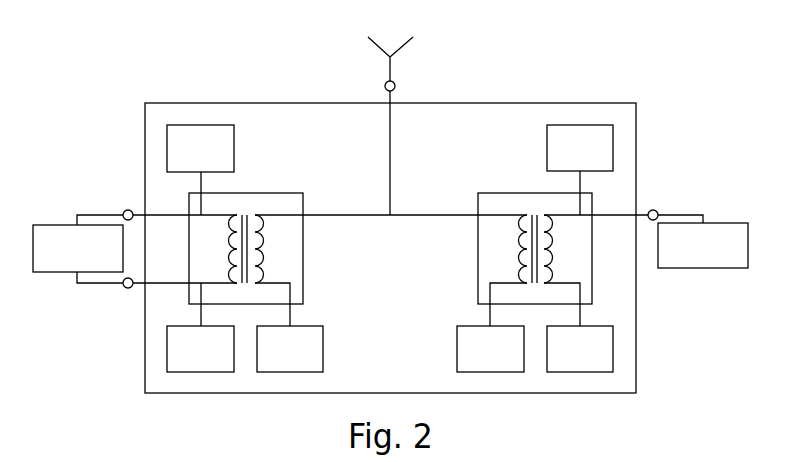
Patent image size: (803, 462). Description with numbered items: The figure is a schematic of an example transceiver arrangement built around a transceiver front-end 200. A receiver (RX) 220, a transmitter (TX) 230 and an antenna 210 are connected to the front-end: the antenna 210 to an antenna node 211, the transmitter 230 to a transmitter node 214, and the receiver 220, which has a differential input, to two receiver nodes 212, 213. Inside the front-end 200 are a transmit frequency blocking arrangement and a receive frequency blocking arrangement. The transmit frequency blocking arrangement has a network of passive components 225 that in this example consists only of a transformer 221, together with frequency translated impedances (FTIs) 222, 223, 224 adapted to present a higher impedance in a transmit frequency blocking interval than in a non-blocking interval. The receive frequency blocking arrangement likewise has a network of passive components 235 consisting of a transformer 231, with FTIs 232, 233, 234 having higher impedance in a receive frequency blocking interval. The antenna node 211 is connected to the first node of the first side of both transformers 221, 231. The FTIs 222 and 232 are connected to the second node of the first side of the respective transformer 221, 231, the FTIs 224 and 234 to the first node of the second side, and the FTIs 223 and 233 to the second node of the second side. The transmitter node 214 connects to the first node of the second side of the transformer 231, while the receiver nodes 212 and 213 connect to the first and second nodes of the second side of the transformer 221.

The transceiver front-end 200 is at (567, 103).
The antenna 210 is at (375, 46).
The antenna node 211 is at (395, 87).
The receiver node 212 is at (123, 212).
The receiver node 213 is at (126, 289).
The transmitter node 214 is at (658, 209).
The receiver (RX) 220 is at (78, 249).
The transformer 221 is at (258, 247).
The frequency translated impedance (FTI) 222 is at (290, 348).
The frequency translated impedance (FTI) 223 is at (200, 348).
The frequency translated impedance (FTI) 224 is at (200, 148).
The network of passive components 225 is at (278, 193).
The transmitter (TX) 230 is at (703, 241).
The transformer 231 is at (517, 250).
The frequency translated impedance (FTI) 232 is at (490, 348).
The frequency translated impedance (FTI) 233 is at (580, 348).
The frequency translated impedance (FTI) 234 is at (580, 147).
The network of passive components 235 is at (503, 193).